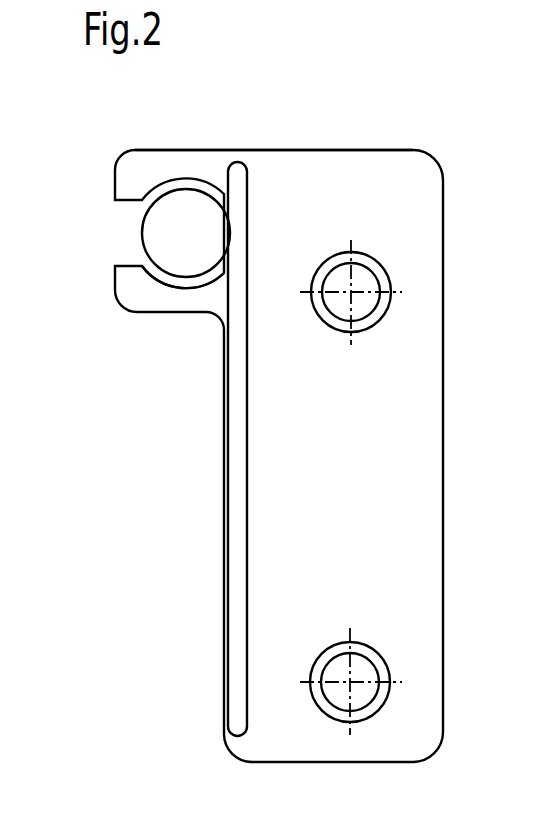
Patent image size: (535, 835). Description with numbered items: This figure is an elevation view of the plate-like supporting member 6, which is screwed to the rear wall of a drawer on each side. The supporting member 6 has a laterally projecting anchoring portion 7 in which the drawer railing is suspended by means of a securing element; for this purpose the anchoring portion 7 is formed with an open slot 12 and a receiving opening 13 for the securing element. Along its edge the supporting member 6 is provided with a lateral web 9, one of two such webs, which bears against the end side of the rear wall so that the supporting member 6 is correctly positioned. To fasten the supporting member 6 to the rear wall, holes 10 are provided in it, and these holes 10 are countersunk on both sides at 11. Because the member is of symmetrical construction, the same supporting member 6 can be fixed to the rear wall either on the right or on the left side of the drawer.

The supporting member 6 is at (210, 458).
The anchoring portion 7 is at (204, 150).
The lateral web 9 is at (222, 539).
The hole 10 is at (338, 692).
The countersink 11 is at (342, 715).
The open slot 12 is at (148, 237).
The receiving opening 13 is at (172, 277).